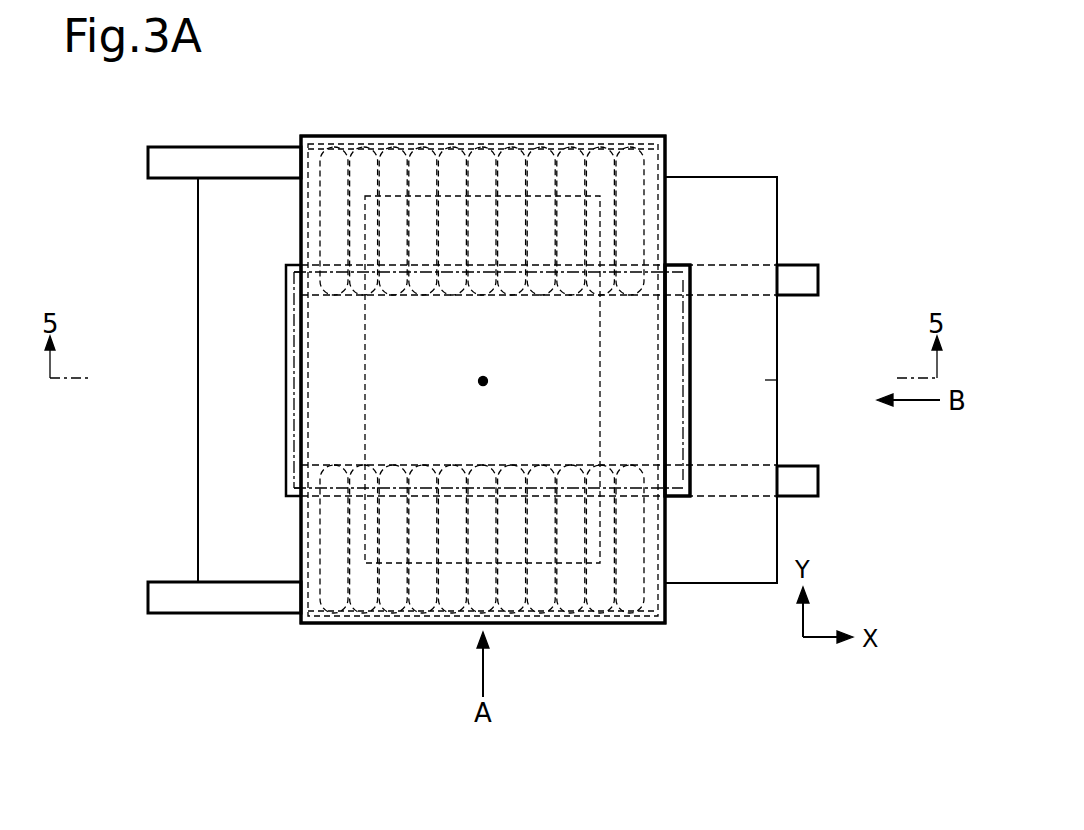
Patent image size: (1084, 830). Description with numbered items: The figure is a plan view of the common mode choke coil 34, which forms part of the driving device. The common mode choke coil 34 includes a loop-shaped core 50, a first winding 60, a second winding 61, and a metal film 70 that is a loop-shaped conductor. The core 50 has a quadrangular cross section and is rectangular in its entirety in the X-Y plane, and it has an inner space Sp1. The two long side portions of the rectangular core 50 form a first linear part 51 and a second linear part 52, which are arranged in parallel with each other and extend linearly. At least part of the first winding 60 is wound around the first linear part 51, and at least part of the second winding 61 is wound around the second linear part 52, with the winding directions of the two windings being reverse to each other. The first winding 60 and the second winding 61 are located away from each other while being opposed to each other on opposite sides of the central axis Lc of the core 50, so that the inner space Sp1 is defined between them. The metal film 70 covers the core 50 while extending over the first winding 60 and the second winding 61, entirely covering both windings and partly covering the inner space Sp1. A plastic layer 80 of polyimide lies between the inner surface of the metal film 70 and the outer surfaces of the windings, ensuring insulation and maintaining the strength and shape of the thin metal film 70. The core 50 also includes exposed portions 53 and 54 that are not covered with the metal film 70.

The common mode choke coil 34 is at (720, 121).
The metal film 70 is at (605, 136).
The plastic layer 80 is at (665, 165).
The first winding 60 is at (312, 218).
The second winding 61 is at (312, 537).
The core 50 is at (777, 333).
The first linear part 51 is at (680, 284).
The second linear part 52 is at (682, 480).
The exposed portion 53 is at (218, 378).
The exposed portion 54 is at (777, 380).
The inner space Sp1 is at (292, 352).
The central axis Lc is at (488, 378).